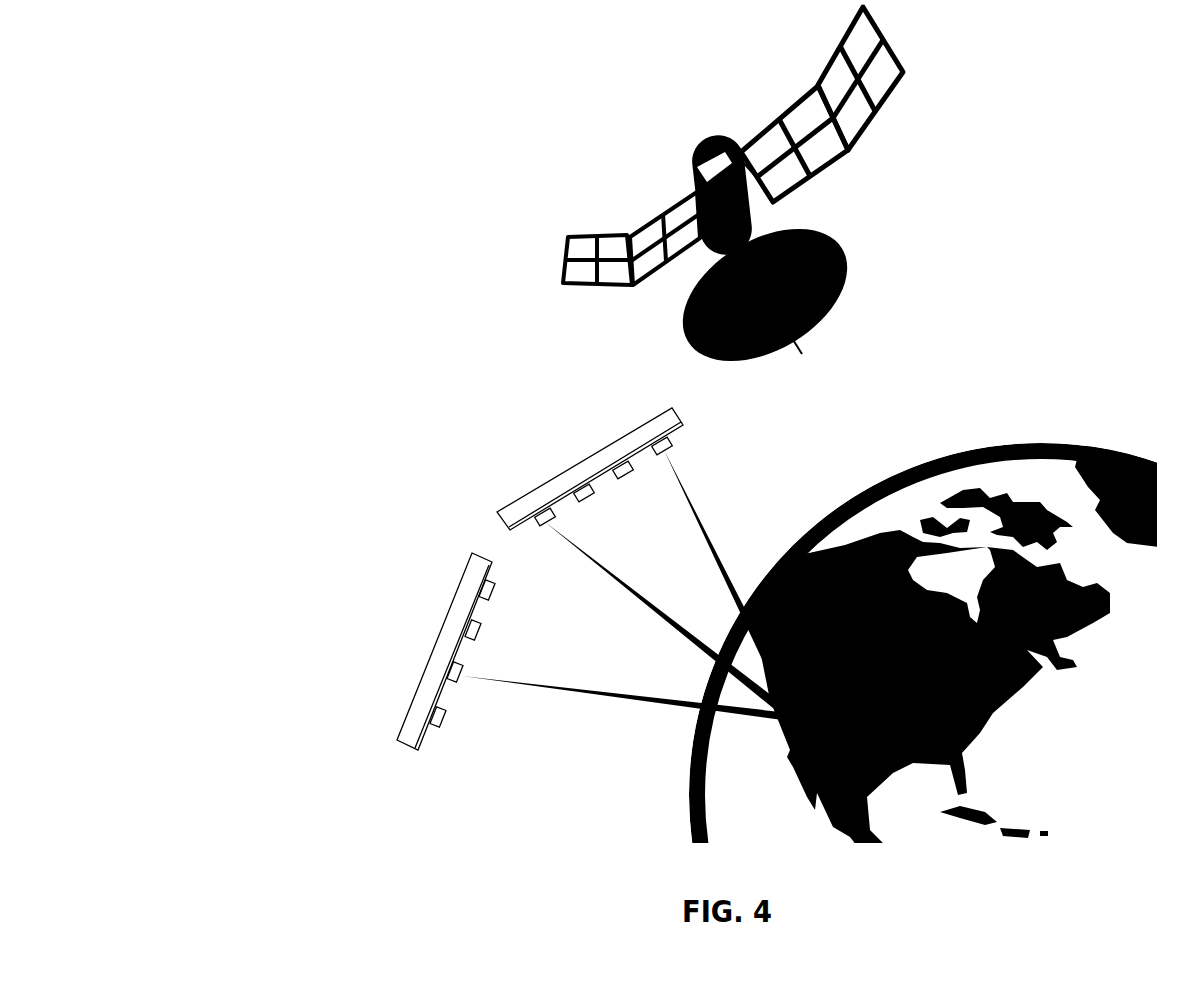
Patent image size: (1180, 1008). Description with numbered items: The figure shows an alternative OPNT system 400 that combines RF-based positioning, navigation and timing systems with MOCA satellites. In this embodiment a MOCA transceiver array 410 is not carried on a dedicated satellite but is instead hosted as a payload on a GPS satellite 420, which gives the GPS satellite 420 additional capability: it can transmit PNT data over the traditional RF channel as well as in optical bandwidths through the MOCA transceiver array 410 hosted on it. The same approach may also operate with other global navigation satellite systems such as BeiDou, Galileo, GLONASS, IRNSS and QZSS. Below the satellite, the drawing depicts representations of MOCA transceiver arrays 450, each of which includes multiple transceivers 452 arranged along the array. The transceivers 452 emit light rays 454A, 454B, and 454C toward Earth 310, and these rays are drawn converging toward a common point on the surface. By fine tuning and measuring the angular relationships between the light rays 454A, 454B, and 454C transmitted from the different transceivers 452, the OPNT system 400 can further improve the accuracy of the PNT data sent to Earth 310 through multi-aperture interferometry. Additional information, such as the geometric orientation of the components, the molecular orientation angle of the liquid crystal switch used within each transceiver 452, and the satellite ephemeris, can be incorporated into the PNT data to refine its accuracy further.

The OPNT system 400 is at (276, 145).
The MOCA transceiver array 410 is at (690, 182).
The GPS satellite 420 is at (897, 92).
The Earth 310 is at (1078, 450).
The MOCA transceiver arrays 450 is at (600, 441).
The transceivers 452 is at (674, 446).
The light ray 454A is at (741, 607).
The light ray 454B is at (657, 608).
The light ray 454C is at (627, 696).